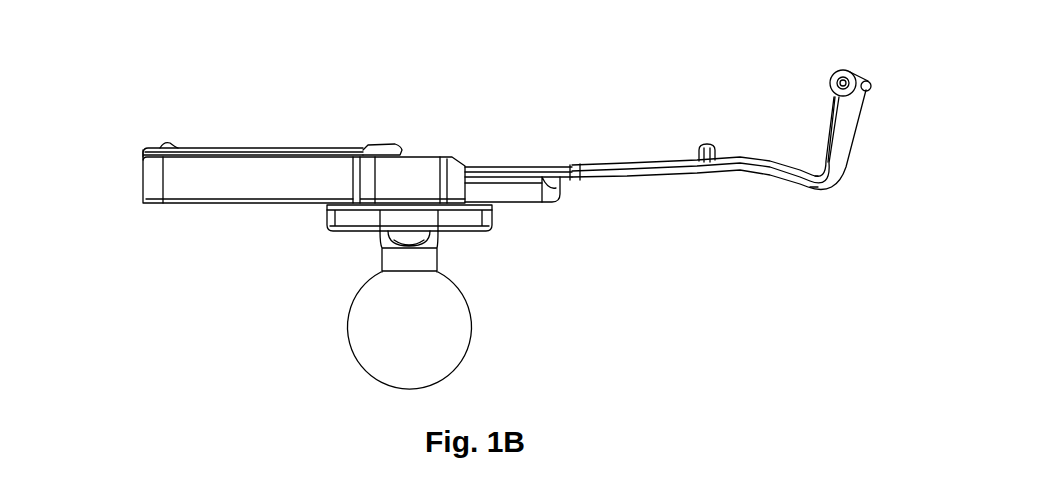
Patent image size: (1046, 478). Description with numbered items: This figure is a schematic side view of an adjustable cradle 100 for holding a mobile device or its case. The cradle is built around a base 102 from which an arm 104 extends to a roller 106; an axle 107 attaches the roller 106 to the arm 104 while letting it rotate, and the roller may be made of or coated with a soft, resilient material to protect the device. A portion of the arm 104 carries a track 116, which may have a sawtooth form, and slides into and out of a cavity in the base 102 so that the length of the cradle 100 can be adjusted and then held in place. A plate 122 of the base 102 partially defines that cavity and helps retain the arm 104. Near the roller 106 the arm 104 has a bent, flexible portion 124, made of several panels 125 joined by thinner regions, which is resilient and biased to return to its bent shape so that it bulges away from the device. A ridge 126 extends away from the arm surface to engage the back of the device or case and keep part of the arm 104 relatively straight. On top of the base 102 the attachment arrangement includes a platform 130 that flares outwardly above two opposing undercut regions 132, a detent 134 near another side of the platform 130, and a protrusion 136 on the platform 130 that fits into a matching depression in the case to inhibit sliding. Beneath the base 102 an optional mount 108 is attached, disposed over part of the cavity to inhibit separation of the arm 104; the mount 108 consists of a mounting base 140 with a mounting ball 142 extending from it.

The adjustable cradle 100 is at (266, 90).
The base 102 is at (221, 190).
The arm 104 is at (628, 165).
The roller 106 is at (836, 71).
The axle 107 is at (851, 77).
The mount 108 is at (343, 231).
The track 116 is at (498, 168).
The plate 122 is at (433, 152).
The bent, flexible portion 124 is at (822, 192).
The panels 125 is at (835, 151).
The ridge 126 is at (705, 146).
The platform 130 is at (228, 148).
The undercut regions 132 is at (131, 151).
The detent 134 is at (392, 147).
The protrusion 136 is at (168, 143).
The mounting base 140 is at (462, 232).
The mounting ball 142 is at (360, 348).